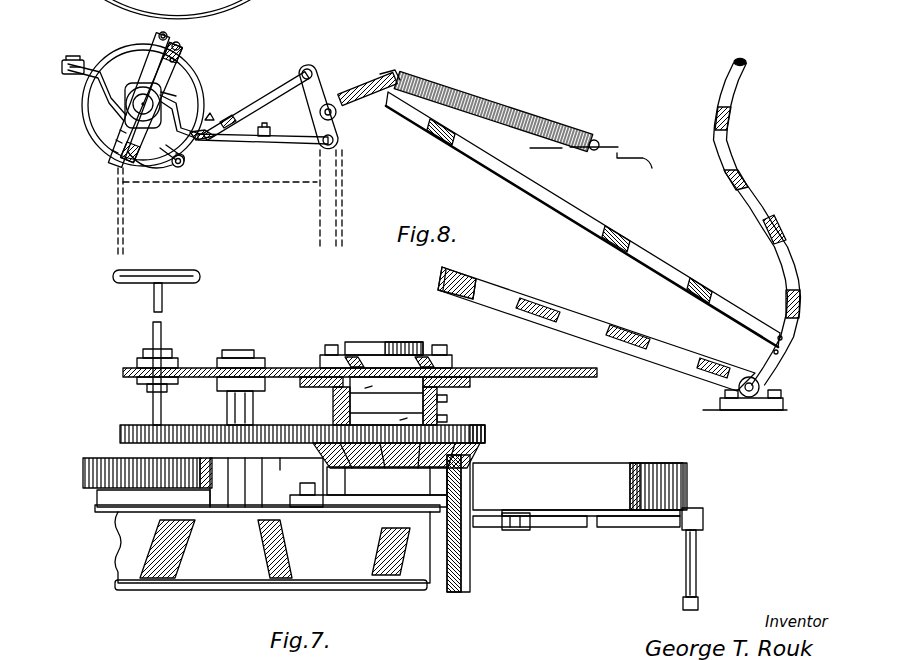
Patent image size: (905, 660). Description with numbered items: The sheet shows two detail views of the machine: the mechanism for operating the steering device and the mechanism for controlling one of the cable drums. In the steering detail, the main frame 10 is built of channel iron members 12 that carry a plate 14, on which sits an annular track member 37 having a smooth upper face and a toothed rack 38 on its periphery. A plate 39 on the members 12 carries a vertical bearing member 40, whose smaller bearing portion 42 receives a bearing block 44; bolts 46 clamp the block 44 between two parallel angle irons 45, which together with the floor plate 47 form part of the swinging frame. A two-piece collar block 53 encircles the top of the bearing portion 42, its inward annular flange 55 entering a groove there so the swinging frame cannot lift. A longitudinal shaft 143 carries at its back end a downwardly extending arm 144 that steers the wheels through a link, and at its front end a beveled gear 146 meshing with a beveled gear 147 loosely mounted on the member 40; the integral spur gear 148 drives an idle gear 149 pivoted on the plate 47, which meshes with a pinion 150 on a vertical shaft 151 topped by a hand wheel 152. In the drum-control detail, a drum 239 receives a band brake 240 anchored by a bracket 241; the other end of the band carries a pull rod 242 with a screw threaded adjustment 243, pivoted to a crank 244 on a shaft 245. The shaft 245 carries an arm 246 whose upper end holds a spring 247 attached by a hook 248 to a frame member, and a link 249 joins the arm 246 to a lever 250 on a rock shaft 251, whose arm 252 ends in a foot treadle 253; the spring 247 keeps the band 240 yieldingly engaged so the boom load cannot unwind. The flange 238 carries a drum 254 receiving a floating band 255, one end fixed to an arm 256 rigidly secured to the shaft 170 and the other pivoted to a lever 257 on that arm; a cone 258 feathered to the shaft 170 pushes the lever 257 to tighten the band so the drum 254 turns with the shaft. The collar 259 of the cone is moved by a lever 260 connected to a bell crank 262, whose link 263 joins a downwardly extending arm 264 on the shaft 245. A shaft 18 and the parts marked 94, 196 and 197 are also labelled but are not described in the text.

In FIG. 8, the drum rim 196 is at (128, 3).
In FIG. 8, the drum flange 197 is at (240, 3).
In FIG. 8, the arm 256 is at (114, 62).
In FIG. 8, the drum 254 is at (100, 147).
In FIG. 8, the shaft 170 is at (126, 114).
In FIG. 8, the flange 238 is at (150, 62).
In FIG. 8, the lever 257 is at (170, 82).
In FIG. 8, the lever 260 is at (216, 88).
In FIG. 8, the floating band 255 is at (172, 85).
In FIG. 8, the cone 258 is at (178, 97).
In FIG. 8, the bracket 241 is at (208, 118).
In FIG. 8, the bell crank 262 is at (262, 148).
In FIG. 8, the link 263 is at (290, 147).
In FIG. 8, the screw threaded adjustment 243 is at (198, 162).
In FIG. 8, the band brake 240 is at (172, 167).
In FIG. 8, the drum 239 is at (157, 160).
In FIG. 8, the collar 259 is at (117, 185).
In FIG. 8, the frame 94 is at (298, 186).
In FIG. 8, the pull rod 242 is at (278, 98).
In FIG. 8, the crank 244 is at (323, 82).
In FIG. 8, the shaft 245 is at (338, 118).
In FIG. 8, the downwardly extending arm 264 is at (340, 145).
In FIG. 8, the arm 246 is at (388, 76).
In FIG. 8, the spring 247 is at (442, 94).
In FIG. 8, the hook 248 is at (602, 146).
In FIG. 8, the shaft 18 is at (652, 168).
In FIG. 8, the link 249 is at (586, 222).
In FIG. 8, the lever 250 is at (764, 212).
In FIG. 8, the arm 252 is at (596, 329).
In FIG. 8, the foot treadle 253 is at (456, 274).
In FIG. 8, the rock shaft 251 is at (750, 398).
In FIG. 7, the hand wheel 152 is at (203, 273).
In FIG. 7, the vertically extending shaft 151 is at (163, 340).
In FIG. 7, the pinion 150 is at (148, 424).
In FIG. 7, the floor plate 47 is at (542, 377).
In FIG. 7, the idle gear 149 is at (297, 412).
In FIG. 7, the bearing portion 42 is at (356, 342).
In FIG. 7, the annular flange 55 is at (370, 350).
In FIG. 7, the collar block 53 is at (386, 362).
In FIG. 7, the angle irons 45 is at (372, 383).
In FIG. 7, the bolts 46 is at (368, 396).
In FIG. 7, the bearing block 44 is at (441, 401).
In FIG. 7, the spur gear 148 is at (484, 435).
In FIG. 7, the beveled gear 147 is at (477, 457).
In FIG. 7, the beveled gear 146 is at (472, 567).
In FIG. 7, the toothed rack 38 is at (167, 463).
In FIG. 7, the annular track member 37 is at (266, 482).
In FIG. 7, the bearing member 40 is at (373, 481).
In FIG. 7, the plate 39 is at (328, 500).
In FIG. 7, the plate 14 is at (95, 512).
In FIG. 7, the channel iron members 12 is at (272, 547).
In FIG. 7, the main frame 10 is at (208, 588).
In FIG. 7, the shaft 143 is at (558, 520).
In FIG. 7, the downwardly extending arm 144 is at (697, 562).